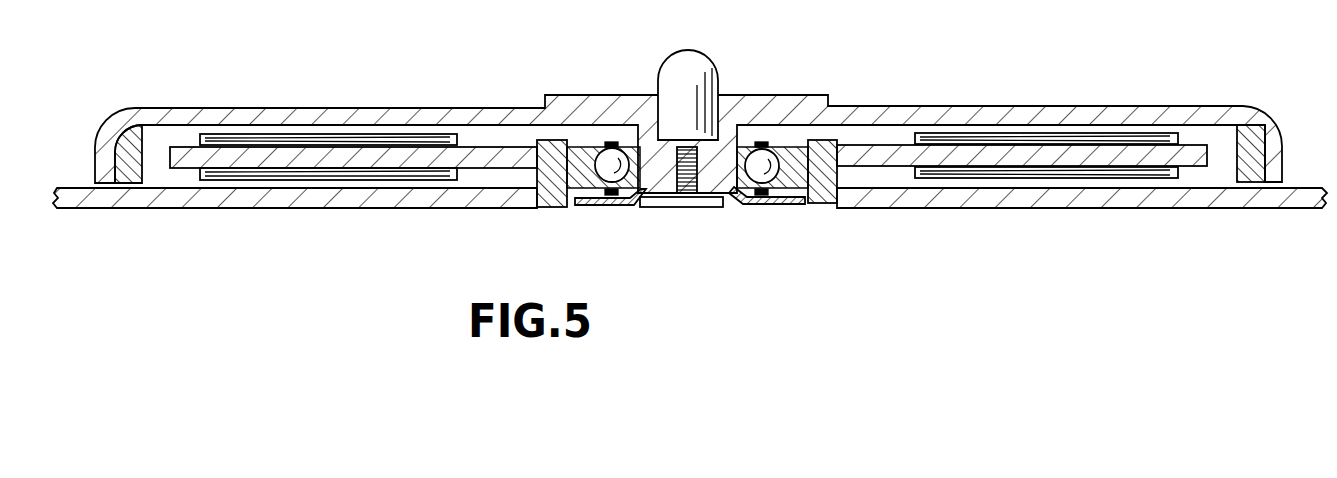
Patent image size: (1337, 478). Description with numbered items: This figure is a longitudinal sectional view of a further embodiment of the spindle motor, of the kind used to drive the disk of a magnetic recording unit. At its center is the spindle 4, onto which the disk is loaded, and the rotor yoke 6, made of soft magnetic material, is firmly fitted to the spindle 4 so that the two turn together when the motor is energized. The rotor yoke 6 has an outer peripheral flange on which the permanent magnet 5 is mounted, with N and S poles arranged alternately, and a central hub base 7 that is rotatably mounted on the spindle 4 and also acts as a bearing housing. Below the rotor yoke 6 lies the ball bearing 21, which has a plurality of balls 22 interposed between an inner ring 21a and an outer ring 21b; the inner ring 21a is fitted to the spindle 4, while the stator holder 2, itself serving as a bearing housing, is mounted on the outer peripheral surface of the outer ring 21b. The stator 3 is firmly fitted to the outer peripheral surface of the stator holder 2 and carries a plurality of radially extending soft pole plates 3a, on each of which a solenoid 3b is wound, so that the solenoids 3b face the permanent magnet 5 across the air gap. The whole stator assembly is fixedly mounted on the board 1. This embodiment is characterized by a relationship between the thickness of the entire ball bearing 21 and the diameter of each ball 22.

The board 1 is at (970, 210).
The stator holder 2 is at (853, 110).
The stator 3 is at (905, 136).
The soft pole plates 3a is at (1200, 143).
The solenoid 3b is at (1019, 138).
The spindle 4 is at (698, 58).
The permanent magnet 5 is at (1258, 138).
The rotor yoke 6 is at (1108, 106).
The central hub base 7 is at (742, 100).
The ball bearing 21 is at (792, 132).
The inner ring 21a is at (745, 206).
The outer ring 21b is at (790, 206).
The ball 22 is at (775, 203).